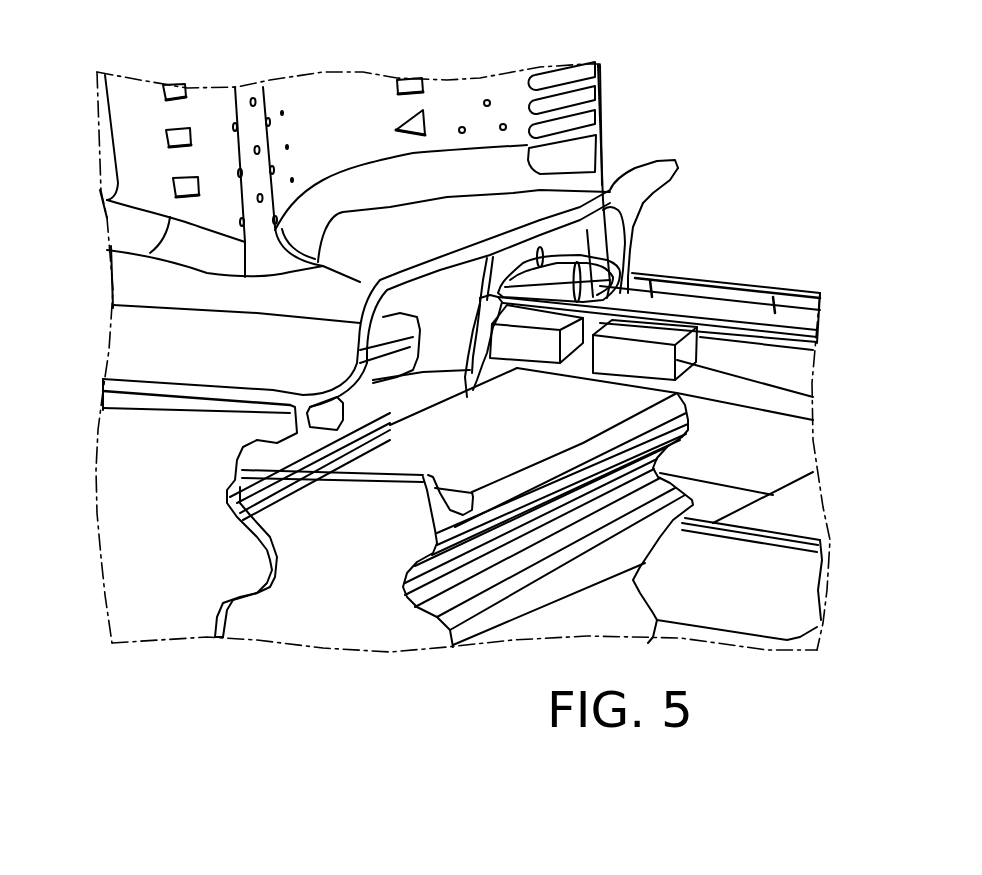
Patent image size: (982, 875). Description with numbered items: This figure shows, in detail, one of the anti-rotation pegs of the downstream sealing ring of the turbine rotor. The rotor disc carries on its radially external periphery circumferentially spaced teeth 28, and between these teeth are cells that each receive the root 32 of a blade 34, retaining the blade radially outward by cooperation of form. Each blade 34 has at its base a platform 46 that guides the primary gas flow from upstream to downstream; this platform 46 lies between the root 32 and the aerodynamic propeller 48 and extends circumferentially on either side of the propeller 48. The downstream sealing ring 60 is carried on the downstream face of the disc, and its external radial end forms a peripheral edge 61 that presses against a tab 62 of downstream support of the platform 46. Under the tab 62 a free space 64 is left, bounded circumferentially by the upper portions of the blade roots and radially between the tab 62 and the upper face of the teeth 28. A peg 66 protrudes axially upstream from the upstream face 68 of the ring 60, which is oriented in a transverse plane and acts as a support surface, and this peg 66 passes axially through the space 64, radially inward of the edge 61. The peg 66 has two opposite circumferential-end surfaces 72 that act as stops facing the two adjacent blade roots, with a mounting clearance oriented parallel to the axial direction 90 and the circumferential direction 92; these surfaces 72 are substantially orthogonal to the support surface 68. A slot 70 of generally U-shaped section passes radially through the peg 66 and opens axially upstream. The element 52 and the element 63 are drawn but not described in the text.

The teeth 28 is at (319, 634).
The root 32 is at (163, 580).
The blade 34 is at (99, 110).
The platform 46 is at (440, 217).
The aerodynamic propeller 48 is at (297, 97).
The rail beam 52 is at (355, 522).
The downstream sealing ring 60 is at (799, 282).
The peripheral edge 61 is at (757, 293).
The tab 62 is at (637, 235).
The rail end panel 63 is at (813, 380).
The free space 64 is at (607, 197).
The peg 66 is at (668, 309).
The upstream face 68 is at (733, 353).
The slot 70 is at (582, 355).
The circumferential-end surface 72 is at (690, 353).
The axial direction 90 is at (328, 735).
The circumferential direction 92 is at (746, 142).